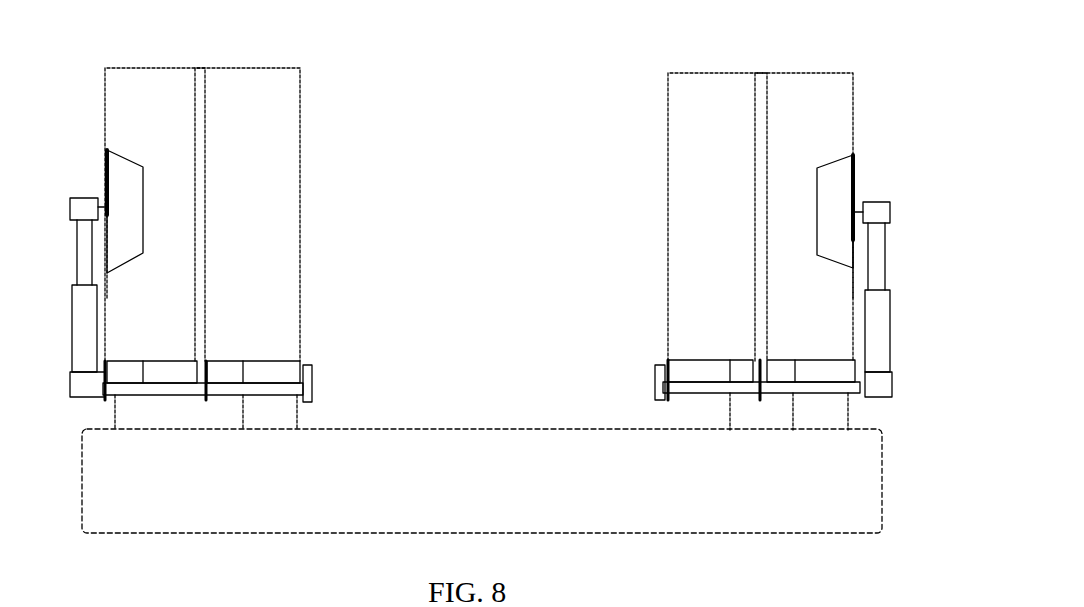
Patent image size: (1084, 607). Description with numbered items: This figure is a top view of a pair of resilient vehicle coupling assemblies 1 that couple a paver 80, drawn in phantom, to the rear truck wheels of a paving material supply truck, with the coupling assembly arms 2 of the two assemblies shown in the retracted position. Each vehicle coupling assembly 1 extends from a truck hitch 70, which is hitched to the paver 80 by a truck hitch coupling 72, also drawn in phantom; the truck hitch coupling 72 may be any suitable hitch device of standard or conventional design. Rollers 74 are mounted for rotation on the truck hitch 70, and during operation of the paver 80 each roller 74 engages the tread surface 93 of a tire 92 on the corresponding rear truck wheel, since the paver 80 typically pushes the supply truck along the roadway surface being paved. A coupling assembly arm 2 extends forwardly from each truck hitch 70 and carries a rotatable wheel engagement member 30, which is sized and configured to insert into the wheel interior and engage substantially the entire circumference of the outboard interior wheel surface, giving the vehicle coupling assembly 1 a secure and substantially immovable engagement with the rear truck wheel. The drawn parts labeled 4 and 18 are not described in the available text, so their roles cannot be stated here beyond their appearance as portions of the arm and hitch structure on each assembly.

The vehicle coupling assembly 1 is at (70, 168).
The coupling assembly arm 2 is at (103, 314).
The post base 4 is at (100, 346).
The upper block 18 is at (66, 262).
The wheel engagement member 30 is at (132, 160).
The truck hitch 70 is at (332, 345).
The truck hitch coupling 72 is at (287, 410).
The roller 74 is at (170, 372).
The paver 80 is at (350, 522).
The tire 92 is at (163, 92).
The tread surface 93 is at (243, 396).